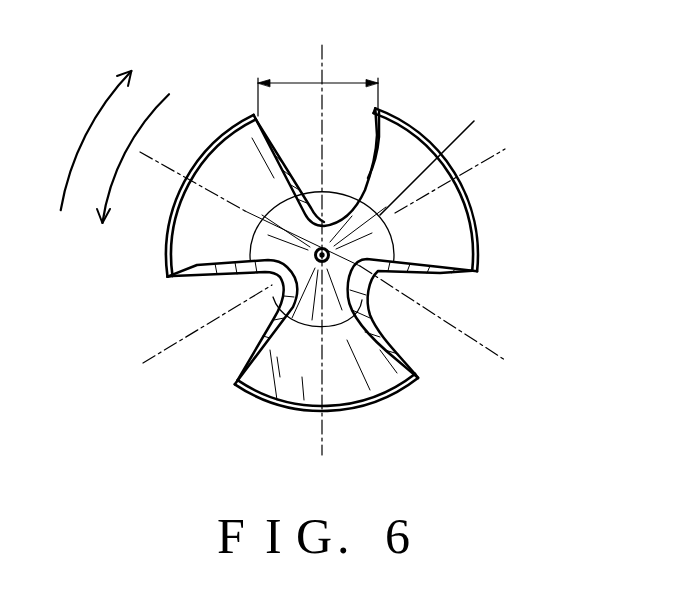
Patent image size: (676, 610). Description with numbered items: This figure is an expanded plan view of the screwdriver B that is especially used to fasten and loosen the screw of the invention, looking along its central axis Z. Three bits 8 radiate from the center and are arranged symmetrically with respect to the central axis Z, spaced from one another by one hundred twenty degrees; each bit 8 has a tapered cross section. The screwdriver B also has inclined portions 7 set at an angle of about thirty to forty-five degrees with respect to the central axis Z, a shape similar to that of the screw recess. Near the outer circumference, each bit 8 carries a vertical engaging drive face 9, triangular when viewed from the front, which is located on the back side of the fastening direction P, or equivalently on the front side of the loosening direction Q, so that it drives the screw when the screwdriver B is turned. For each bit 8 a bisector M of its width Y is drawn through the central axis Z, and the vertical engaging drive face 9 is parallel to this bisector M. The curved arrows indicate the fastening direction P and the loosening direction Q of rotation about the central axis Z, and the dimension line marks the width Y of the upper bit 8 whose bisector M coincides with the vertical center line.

The inclined portion 7 is at (240, 165).
The bit 8 is at (400, 158).
The vertical engaging drive face 9 is at (379, 108).
The width Y is at (309, 80).
The central axis Z is at (517, 88).
The screwdriver B is at (506, 159).
The bisector M is at (446, 320).
The fastening direction P is at (128, 181).
The loosening direction Q is at (107, 125).